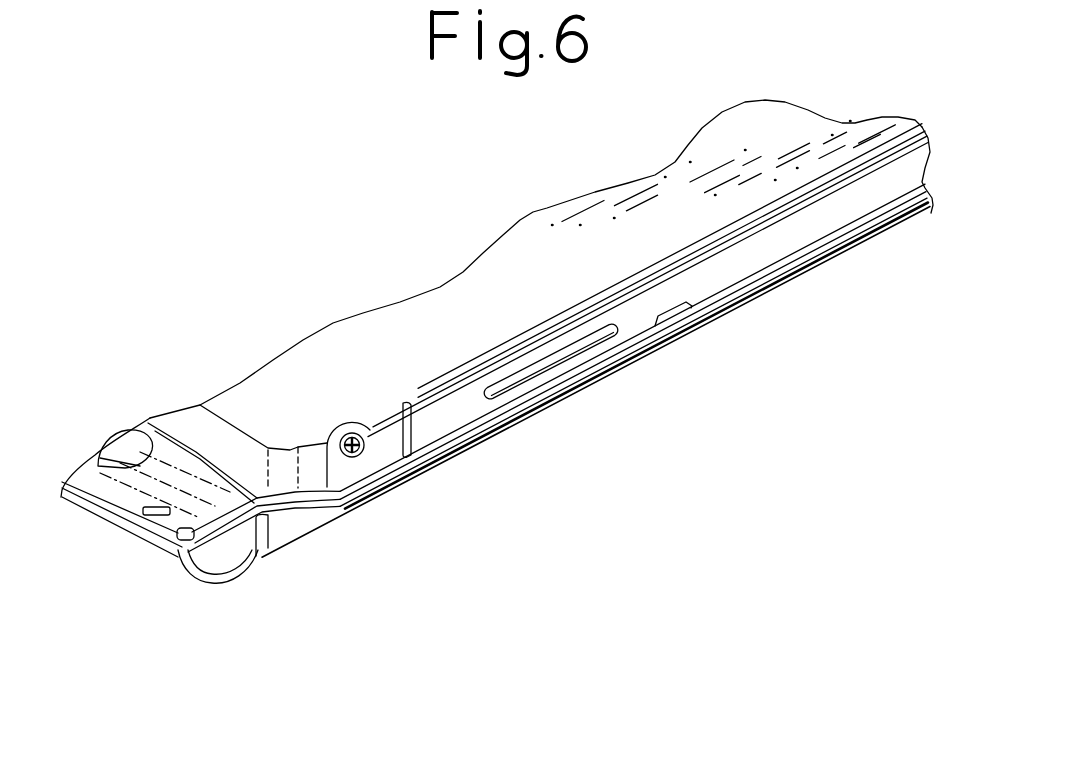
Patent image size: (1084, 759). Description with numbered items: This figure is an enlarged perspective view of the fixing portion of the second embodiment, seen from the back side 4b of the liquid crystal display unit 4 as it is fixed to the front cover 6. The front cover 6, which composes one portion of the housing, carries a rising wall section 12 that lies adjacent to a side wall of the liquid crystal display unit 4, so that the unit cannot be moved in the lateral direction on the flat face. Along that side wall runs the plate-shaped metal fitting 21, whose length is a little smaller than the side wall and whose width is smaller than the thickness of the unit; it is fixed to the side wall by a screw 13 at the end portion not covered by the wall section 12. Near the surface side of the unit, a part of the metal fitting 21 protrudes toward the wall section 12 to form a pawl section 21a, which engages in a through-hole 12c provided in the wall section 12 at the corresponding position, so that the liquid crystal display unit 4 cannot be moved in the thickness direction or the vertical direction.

The liquid crystal display unit 4 is at (527, 270).
The back side 4b is at (495, 322).
The front cover 6 is at (633, 367).
The wall section 12 is at (460, 407).
The through-hole 12c is at (693, 308).
The screw 13 is at (358, 430).
The plate-shaped metal fitting 21 is at (377, 445).
The pawl section 21a is at (672, 318).